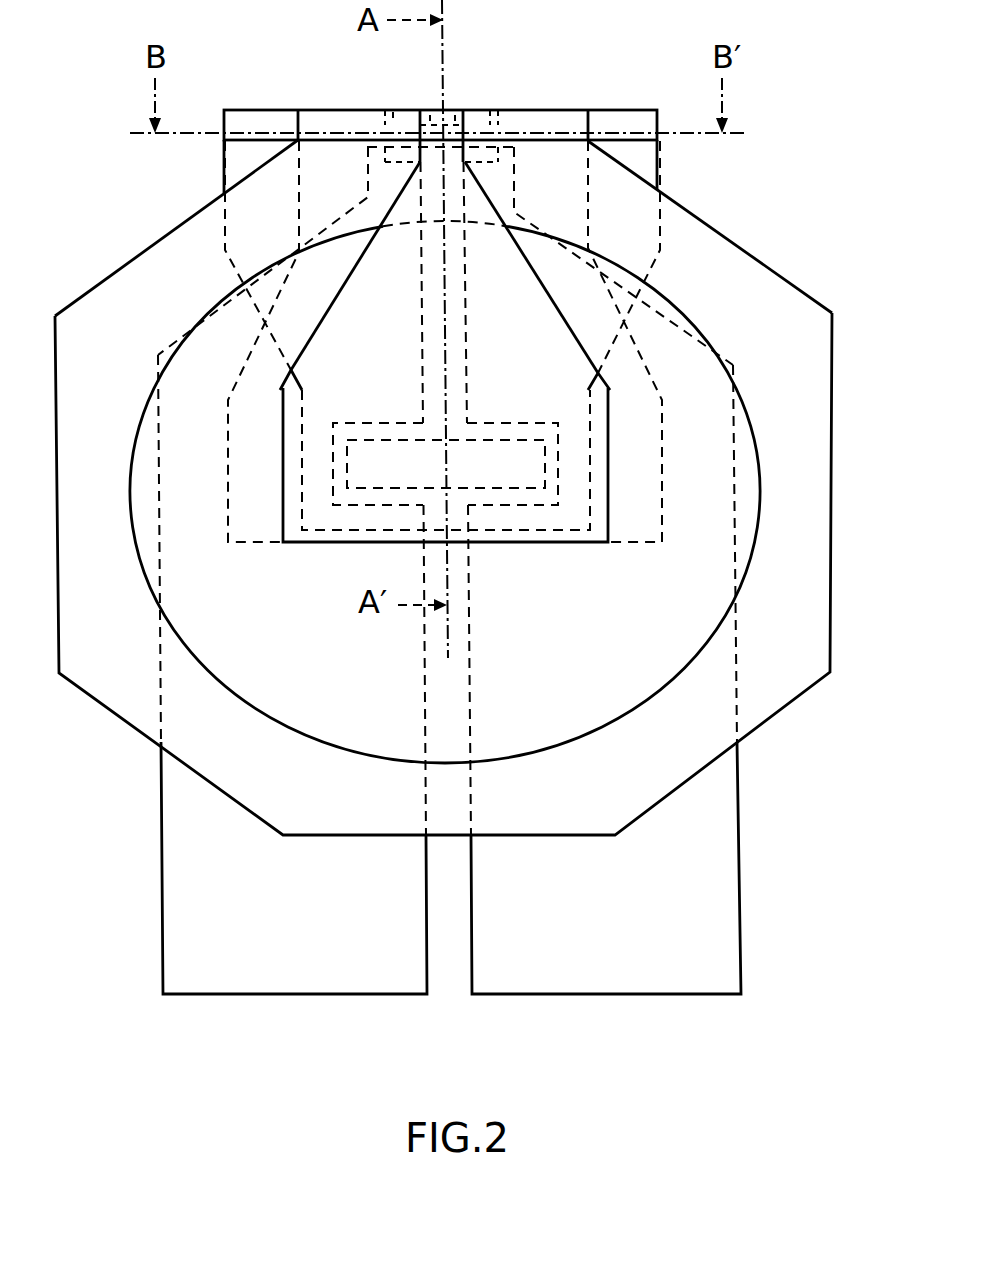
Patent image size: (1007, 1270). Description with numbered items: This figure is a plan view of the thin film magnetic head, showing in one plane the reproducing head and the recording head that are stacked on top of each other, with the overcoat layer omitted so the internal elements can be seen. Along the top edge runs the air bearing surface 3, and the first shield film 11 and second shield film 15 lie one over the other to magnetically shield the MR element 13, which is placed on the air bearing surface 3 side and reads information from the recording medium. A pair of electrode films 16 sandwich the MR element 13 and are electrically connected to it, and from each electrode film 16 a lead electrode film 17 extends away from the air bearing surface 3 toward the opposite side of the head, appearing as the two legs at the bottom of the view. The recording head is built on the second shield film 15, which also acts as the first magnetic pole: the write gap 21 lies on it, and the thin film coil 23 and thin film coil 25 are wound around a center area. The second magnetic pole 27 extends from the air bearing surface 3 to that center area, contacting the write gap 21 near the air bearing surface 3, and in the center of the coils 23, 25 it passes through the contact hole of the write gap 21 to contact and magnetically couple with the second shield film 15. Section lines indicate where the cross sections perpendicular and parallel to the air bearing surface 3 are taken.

The air bearing surface 3 is at (580, 108).
The first shield film 11 is at (660, 173).
The MR element 13 is at (453, 108).
The second shield film 15 is at (299, 212).
The electrode films 16 is at (393, 110).
The lead electrode films 17 is at (295, 997).
The write gap 21 is at (793, 705).
The thin film coil 23 is at (396, 513).
The thin film coil 25 is at (140, 572).
The second magnetic pole 27 is at (608, 467).